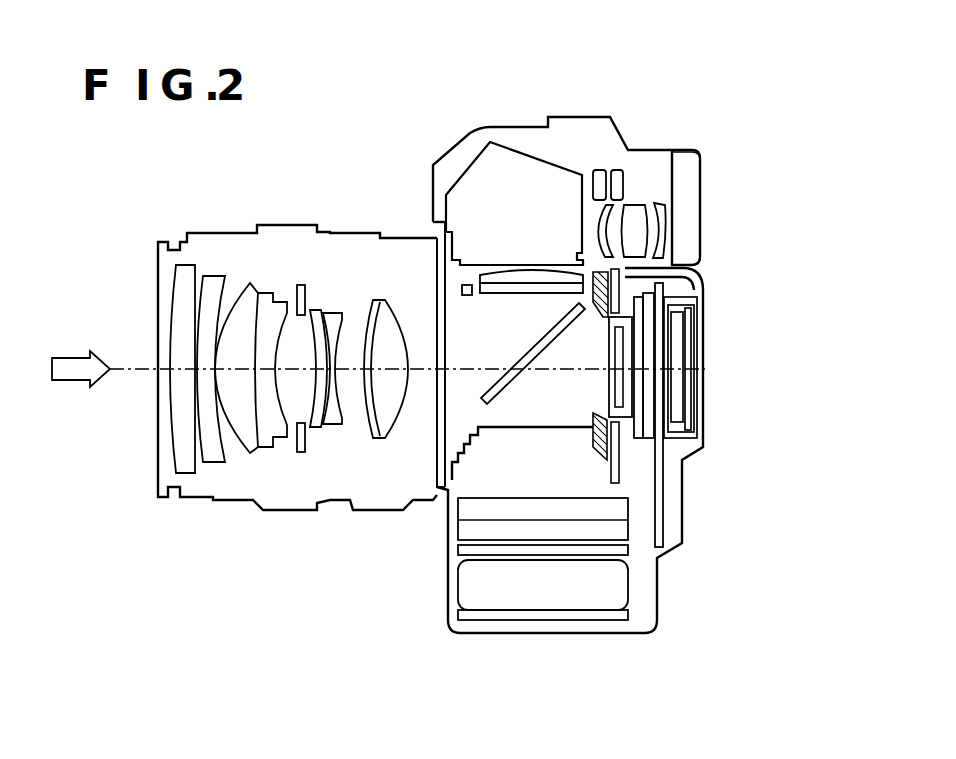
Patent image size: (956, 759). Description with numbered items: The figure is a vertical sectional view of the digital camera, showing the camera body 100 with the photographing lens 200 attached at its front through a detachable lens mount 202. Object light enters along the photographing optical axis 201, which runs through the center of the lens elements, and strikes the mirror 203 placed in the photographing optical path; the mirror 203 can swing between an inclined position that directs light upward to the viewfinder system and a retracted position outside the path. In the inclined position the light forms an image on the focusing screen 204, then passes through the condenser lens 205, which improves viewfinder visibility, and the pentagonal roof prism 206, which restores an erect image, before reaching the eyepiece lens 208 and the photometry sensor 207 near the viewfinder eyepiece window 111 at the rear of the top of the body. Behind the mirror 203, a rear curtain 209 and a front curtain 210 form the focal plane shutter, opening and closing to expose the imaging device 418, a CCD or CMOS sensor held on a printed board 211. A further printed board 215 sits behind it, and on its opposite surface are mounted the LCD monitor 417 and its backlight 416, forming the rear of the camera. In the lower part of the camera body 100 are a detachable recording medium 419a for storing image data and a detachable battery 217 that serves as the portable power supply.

The camera body 100 is at (625, 121).
The viewfinder eyepiece window 111 is at (697, 205).
The photographing lens 200 is at (286, 224).
The photographing optical axis 201 is at (303, 372).
The lens mount 202 is at (442, 458).
The mirror 203 is at (481, 394).
The focusing screen 204 is at (497, 290).
The condenser lens 205 is at (515, 272).
The pentagonal roof prism 206 is at (545, 170).
The photometry sensor 207 is at (620, 187).
The eyepiece lens 208 is at (662, 212).
The rear curtain 209 is at (606, 294).
The front curtain 210 is at (608, 437).
The printed board 211 is at (645, 398).
The printed board 215 is at (622, 337).
The backlight 416 is at (660, 336).
The LCD monitor 417 is at (678, 367).
The imaging device 418 is at (640, 302).
The recording medium 419a is at (615, 507).
The battery 217 is at (615, 588).